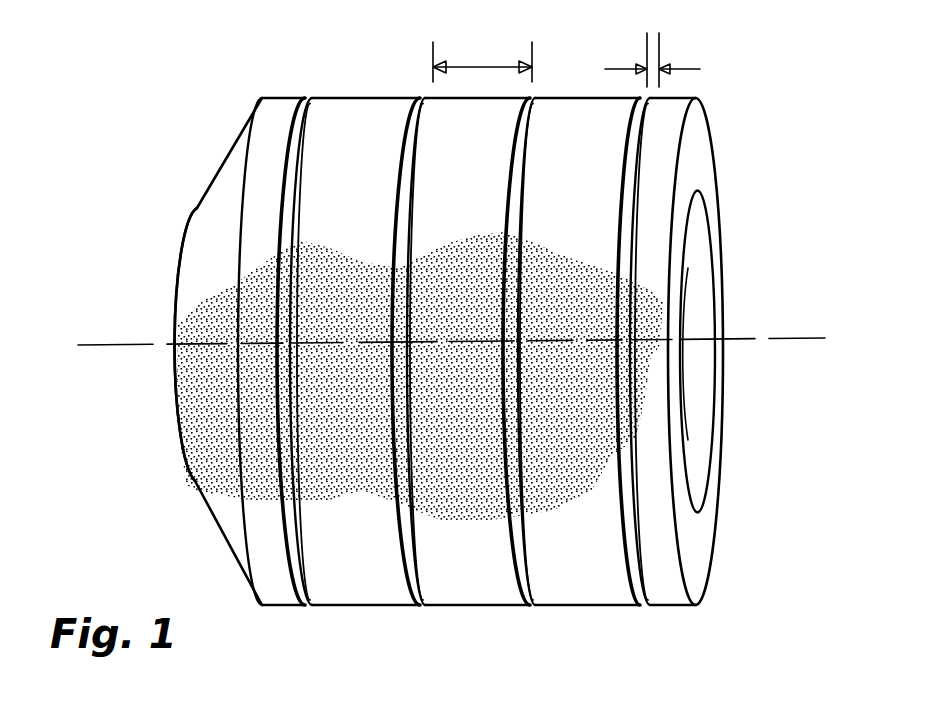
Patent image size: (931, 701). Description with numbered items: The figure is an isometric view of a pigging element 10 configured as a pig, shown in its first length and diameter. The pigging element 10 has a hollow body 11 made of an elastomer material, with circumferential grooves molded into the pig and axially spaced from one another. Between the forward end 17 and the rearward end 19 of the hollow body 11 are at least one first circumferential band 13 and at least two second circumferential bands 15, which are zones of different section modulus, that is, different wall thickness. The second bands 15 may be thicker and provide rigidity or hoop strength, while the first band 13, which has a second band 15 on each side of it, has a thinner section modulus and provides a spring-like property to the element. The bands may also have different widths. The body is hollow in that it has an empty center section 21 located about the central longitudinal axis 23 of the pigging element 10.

The pigging element 10 is at (137, 168).
The hollow body 11 is at (235, 132).
The first circumferential band 13 is at (283, 383).
The second circumferential band 15 is at (347, 96).
The forward end 17 is at (177, 435).
The rearward end 19 is at (702, 165).
The hollow center section 21 is at (697, 390).
The central longitudinal axis 23 is at (120, 352).